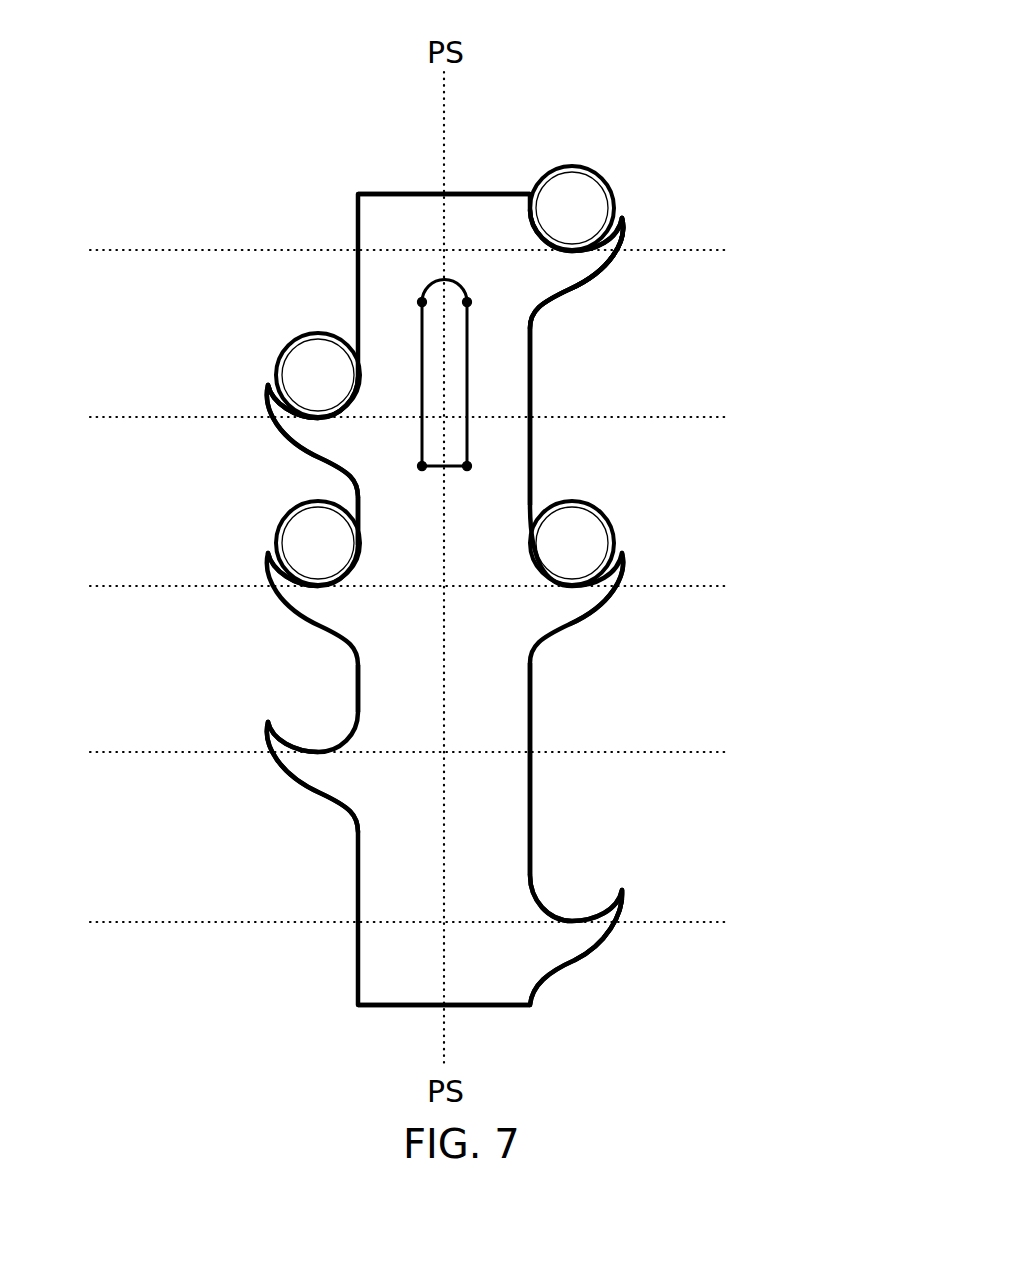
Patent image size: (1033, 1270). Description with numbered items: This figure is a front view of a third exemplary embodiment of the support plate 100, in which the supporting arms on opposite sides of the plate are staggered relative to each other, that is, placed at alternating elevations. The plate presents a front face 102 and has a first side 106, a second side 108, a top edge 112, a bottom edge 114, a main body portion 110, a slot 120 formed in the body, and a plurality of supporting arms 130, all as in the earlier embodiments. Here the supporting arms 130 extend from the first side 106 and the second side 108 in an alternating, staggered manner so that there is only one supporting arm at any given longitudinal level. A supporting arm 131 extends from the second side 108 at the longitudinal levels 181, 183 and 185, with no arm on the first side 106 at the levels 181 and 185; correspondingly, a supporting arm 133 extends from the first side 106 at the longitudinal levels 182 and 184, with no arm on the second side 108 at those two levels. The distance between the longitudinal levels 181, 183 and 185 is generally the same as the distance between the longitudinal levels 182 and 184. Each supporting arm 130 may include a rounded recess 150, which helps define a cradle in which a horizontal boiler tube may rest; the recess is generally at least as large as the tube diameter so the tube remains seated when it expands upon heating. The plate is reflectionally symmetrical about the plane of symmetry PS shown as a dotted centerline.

The support plate 100 is at (622, 163).
The front face 102 is at (458, 605).
The first side 106 is at (335, 443).
The second side 108 is at (540, 266).
The main body portion 110 is at (435, 558).
The top edge 112 is at (400, 193).
The bottom edge 114 is at (480, 1008).
The slot 120 is at (447, 400).
The supporting arms 130 is at (547, 286).
The supporting arm 131 is at (598, 264).
The supporting arm 133 is at (285, 430).
The rounded recess 150 is at (570, 923).
The longitudinal level 181 is at (384, 249).
The longitudinal level 182 is at (384, 414).
The longitudinal level 183 is at (384, 587).
The longitudinal level 184 is at (384, 757).
The longitudinal level 185 is at (384, 922).